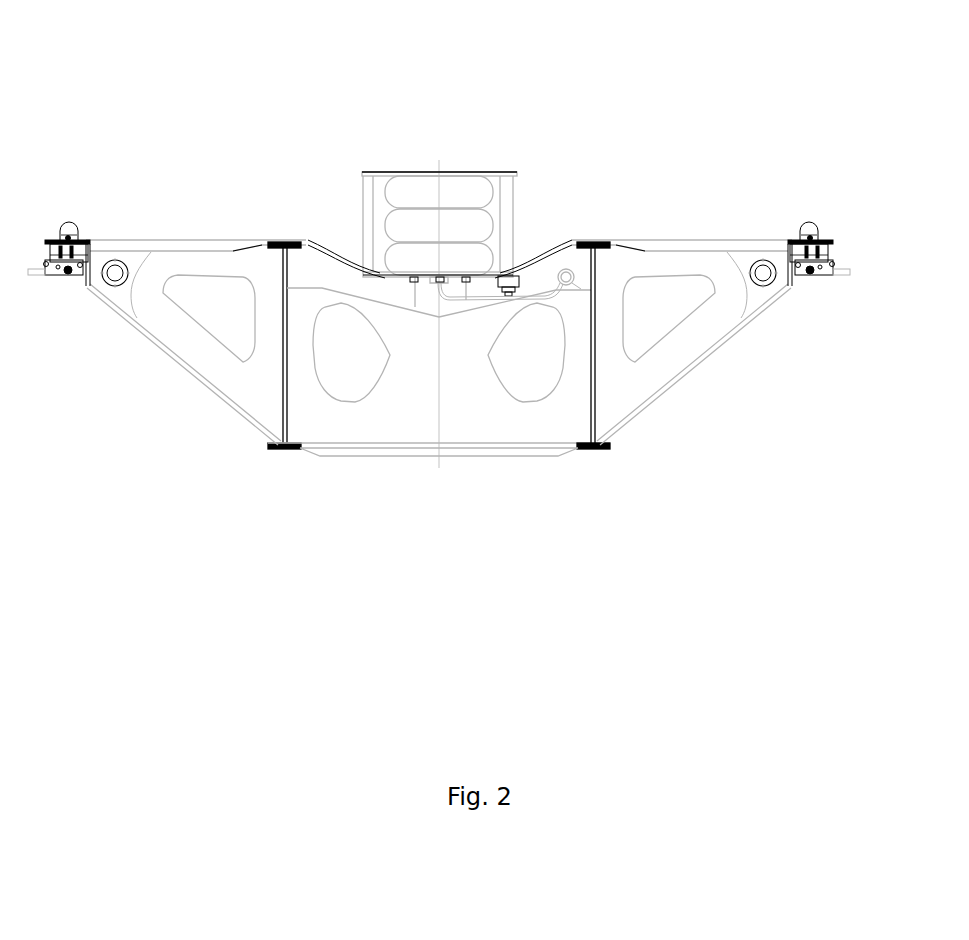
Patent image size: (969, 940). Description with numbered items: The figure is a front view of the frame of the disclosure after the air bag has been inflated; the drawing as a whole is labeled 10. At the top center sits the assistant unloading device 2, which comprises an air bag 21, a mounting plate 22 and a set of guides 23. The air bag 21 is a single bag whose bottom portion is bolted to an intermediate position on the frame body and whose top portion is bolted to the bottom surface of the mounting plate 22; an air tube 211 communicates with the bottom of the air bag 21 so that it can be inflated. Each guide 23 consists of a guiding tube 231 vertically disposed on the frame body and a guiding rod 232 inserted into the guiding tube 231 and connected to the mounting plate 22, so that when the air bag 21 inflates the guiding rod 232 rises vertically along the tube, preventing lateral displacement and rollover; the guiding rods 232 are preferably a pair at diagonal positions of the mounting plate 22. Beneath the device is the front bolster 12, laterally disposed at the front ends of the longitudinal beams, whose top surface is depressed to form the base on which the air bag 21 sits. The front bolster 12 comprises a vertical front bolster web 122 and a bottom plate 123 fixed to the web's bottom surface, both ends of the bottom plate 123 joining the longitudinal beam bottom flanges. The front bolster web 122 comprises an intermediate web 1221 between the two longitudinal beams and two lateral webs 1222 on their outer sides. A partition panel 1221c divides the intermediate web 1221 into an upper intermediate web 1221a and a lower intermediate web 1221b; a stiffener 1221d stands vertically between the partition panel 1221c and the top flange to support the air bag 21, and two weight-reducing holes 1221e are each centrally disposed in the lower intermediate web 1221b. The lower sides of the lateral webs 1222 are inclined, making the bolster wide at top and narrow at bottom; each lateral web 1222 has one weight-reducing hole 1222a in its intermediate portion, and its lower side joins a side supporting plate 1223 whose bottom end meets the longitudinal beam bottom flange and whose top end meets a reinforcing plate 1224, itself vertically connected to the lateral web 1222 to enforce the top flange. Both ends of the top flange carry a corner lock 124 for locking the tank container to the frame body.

The bogie 10 is at (100, 47).
The assistant unloading device 2 is at (587, 62).
The air bag 21 is at (457, 190).
The mounting plate 22 is at (384, 172).
The guide 23 is at (532, 110).
The guiding tube 231 is at (508, 280).
The guiding rod 232 is at (508, 246).
The air tube 211 is at (577, 288).
The front bolster 12 is at (322, 554).
The front bolster web 122 is at (832, 463).
The intermediate web 1221 is at (625, 580).
The upper intermediate web 1221a is at (377, 287).
The lower intermediate web 1221b is at (373, 422).
The partition panel 1221c is at (477, 315).
The stiffener 1221d is at (448, 310).
The weight-reducing hole 1221e is at (530, 378).
The lateral web 1222 is at (728, 255).
The weight-reducing hole 1222a is at (635, 317).
The side supporting plate 1223 is at (717, 310).
The reinforcing plate 1224 is at (786, 283).
The bottom plate 123 is at (325, 452).
The corner lock 124 is at (820, 277).